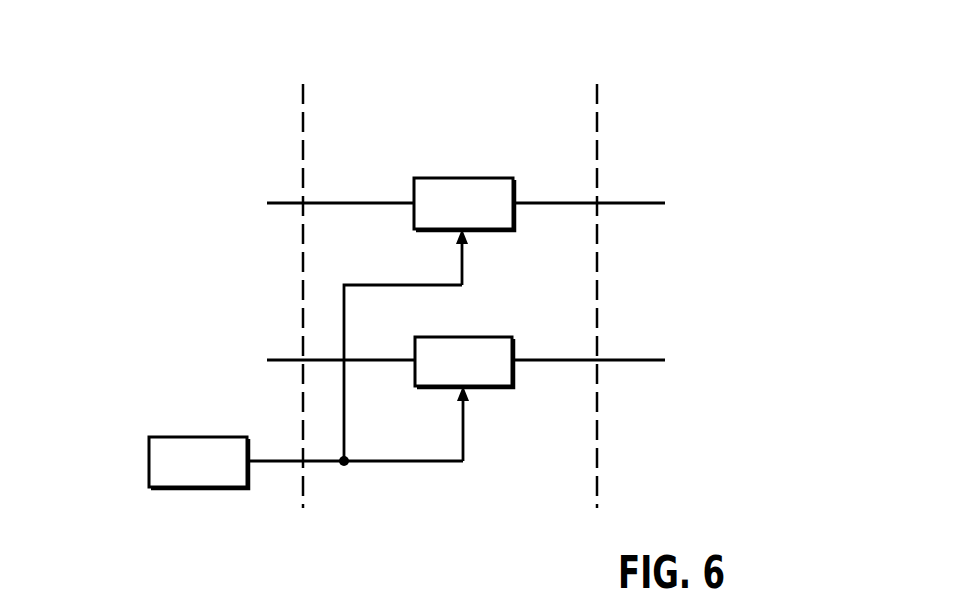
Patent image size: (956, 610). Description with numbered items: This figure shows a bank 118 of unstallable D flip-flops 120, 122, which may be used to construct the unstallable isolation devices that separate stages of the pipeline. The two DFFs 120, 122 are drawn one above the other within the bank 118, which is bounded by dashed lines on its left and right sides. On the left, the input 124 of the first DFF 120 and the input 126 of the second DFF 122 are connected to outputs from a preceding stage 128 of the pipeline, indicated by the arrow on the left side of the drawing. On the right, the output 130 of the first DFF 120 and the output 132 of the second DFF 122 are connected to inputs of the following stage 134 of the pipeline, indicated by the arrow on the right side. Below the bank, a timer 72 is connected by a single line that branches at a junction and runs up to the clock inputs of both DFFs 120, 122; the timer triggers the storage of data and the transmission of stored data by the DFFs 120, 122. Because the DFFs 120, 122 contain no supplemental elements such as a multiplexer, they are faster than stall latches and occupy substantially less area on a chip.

The bank of unstallable D flip-flops 118 is at (406, 90).
The D flip-flop 120 is at (430, 178).
The D flip-flop 122 is at (430, 337).
The input 124 is at (290, 203).
The input 126 is at (290, 360).
The preceding stage 128 is at (159, 234).
The output 130 is at (635, 203).
The output 132 is at (635, 361).
The following stage 134 is at (736, 264).
The timer 72 is at (190, 437).